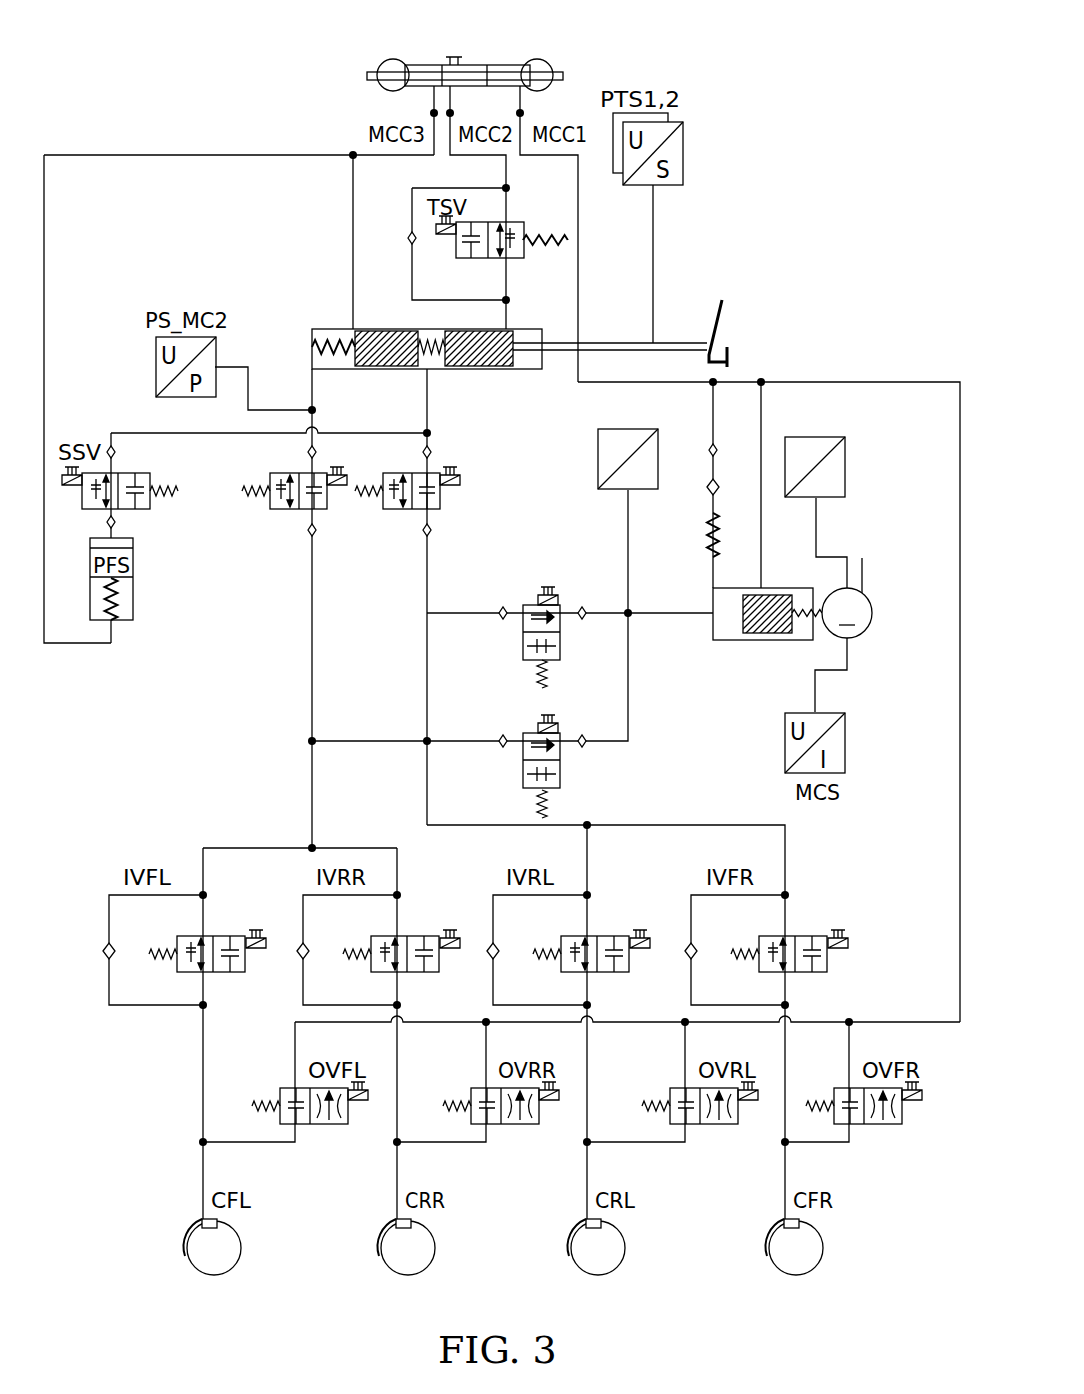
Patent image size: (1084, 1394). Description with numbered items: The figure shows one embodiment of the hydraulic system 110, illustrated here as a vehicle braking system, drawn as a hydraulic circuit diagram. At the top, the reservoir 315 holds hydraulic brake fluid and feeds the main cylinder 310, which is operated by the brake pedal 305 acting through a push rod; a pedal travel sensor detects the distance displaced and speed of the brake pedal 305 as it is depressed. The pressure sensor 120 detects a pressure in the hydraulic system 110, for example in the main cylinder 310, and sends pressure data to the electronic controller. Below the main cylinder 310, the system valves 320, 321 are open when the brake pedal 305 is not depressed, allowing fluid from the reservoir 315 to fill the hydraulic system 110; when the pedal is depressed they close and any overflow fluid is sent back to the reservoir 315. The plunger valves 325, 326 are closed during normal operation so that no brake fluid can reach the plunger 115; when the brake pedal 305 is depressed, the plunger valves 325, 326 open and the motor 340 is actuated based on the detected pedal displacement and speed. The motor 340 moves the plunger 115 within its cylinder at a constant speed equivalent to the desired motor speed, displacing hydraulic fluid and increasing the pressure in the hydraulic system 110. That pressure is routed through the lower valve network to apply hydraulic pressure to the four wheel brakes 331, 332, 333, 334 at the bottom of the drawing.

The hydraulic system 110 is at (848, 85).
The reservoir 315 is at (570, 56).
The brake pedal 305 is at (738, 300).
The main cylinder 310 is at (462, 375).
The pressure sensor 120 is at (576, 412).
The plunger 115 is at (827, 511).
The motor 340 is at (876, 614).
The system valve 320 is at (278, 520).
The system valve 321 is at (393, 520).
The plunger valve 325 is at (518, 598).
The plunger valve 326 is at (518, 725).
The brake 331 is at (187, 1254).
The brake 332 is at (381, 1254).
The brake 333 is at (571, 1254).
The brake 334 is at (769, 1254).